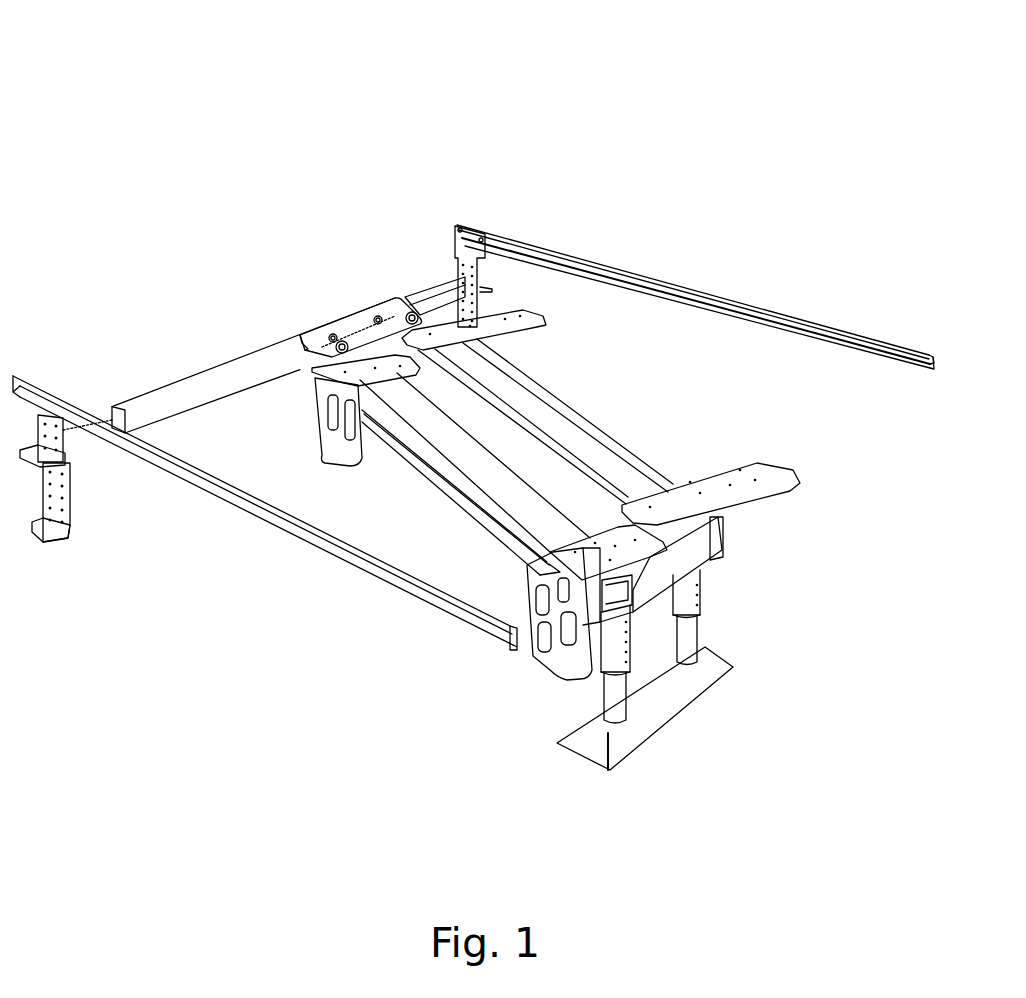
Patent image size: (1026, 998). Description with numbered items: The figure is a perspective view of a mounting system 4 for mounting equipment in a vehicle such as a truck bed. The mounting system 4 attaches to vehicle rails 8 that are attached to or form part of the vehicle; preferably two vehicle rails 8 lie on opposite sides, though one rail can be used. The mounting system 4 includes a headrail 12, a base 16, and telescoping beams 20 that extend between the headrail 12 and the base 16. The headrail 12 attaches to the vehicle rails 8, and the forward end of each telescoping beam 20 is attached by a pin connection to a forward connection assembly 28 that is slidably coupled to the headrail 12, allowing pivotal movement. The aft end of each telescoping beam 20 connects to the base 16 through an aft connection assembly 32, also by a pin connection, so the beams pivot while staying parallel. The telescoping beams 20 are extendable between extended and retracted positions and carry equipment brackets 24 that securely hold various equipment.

The mounting system 4 is at (252, 86).
The vehicle rails 8 is at (600, 266).
The headrail 12 is at (228, 380).
The base 16 is at (598, 740).
The telescoping beams 20 is at (530, 442).
The equipment brackets 24 is at (720, 483).
The forward connection assembly 28 is at (328, 305).
The aft connection assembly 32 is at (735, 600).